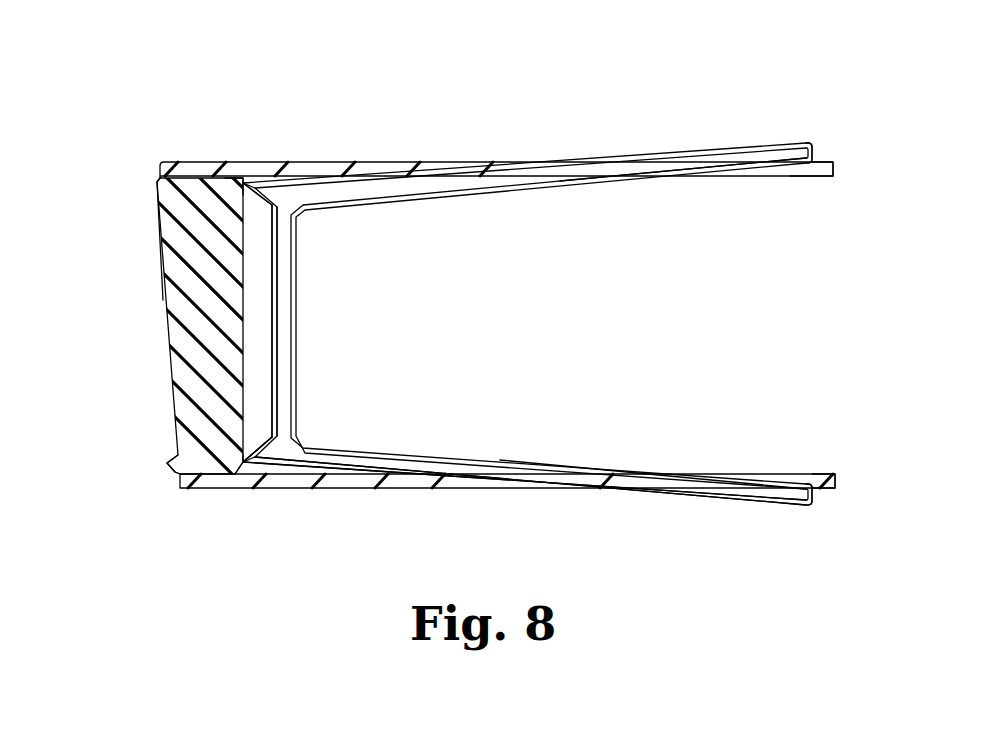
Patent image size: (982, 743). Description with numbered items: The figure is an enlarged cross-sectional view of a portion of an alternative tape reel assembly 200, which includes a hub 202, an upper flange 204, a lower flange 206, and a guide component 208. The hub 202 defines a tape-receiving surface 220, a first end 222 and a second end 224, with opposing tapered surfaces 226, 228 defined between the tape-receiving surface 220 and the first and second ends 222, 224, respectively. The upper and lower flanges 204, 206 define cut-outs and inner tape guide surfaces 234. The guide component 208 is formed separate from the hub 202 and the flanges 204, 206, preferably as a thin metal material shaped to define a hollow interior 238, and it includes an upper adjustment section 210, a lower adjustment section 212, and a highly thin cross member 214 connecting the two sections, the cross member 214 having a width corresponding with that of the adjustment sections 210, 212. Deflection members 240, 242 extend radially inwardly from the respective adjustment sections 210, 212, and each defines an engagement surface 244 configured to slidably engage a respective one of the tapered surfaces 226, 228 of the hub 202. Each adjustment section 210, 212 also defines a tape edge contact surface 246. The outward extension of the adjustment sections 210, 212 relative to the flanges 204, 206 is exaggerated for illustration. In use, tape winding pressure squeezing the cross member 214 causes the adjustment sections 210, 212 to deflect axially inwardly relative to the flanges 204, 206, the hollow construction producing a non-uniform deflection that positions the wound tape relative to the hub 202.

The tape reel assembly 200 is at (400, 81).
The hub 202 is at (156, 316).
The upper flange 204 is at (458, 150).
The lower flange 206 is at (456, 504).
The guide component 208 is at (472, 321).
The upper adjustment section 210 is at (580, 146).
The lower adjustment section 212 is at (590, 492).
The cross member 214 is at (311, 337).
The tape-receiving surface 220 is at (283, 365).
The first end 222 is at (160, 185).
The second end 224 is at (170, 472).
The tapered surface 226 is at (234, 178).
The tapered surface 228 is at (237, 474).
The tape guide surface 234 is at (767, 177).
The hollow interior 238 is at (710, 157).
The deflection member 240 is at (279, 169).
The deflection member 242 is at (282, 486).
The engagement surface 244 is at (278, 242).
The tape edge contact surface 246 is at (564, 184).